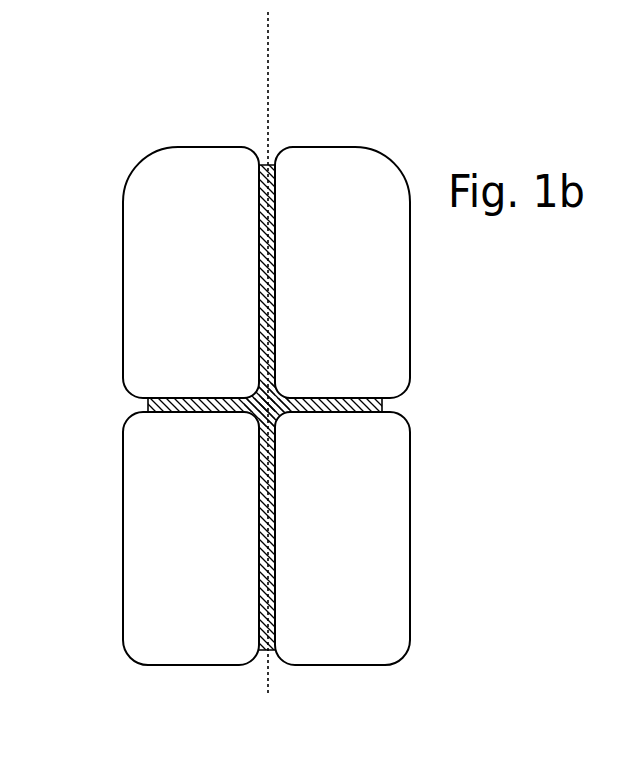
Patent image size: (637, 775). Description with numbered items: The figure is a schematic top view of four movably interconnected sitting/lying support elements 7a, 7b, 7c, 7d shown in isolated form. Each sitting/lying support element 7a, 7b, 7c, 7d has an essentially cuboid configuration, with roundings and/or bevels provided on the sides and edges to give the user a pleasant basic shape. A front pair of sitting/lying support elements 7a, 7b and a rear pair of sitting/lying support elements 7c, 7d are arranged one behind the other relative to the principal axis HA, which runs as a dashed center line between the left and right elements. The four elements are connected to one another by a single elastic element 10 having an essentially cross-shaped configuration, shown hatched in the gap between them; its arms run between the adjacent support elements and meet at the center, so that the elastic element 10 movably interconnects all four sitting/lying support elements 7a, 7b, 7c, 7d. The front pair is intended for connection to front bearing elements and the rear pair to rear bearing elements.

The sitting/lying support element 7a is at (136, 277).
The sitting/lying support element 7b is at (356, 167).
The sitting/lying support element 7c is at (168, 578).
The sitting/lying support element 7d is at (393, 535).
The elastic element 10 is at (272, 166).
The principal axis HA is at (292, 347).